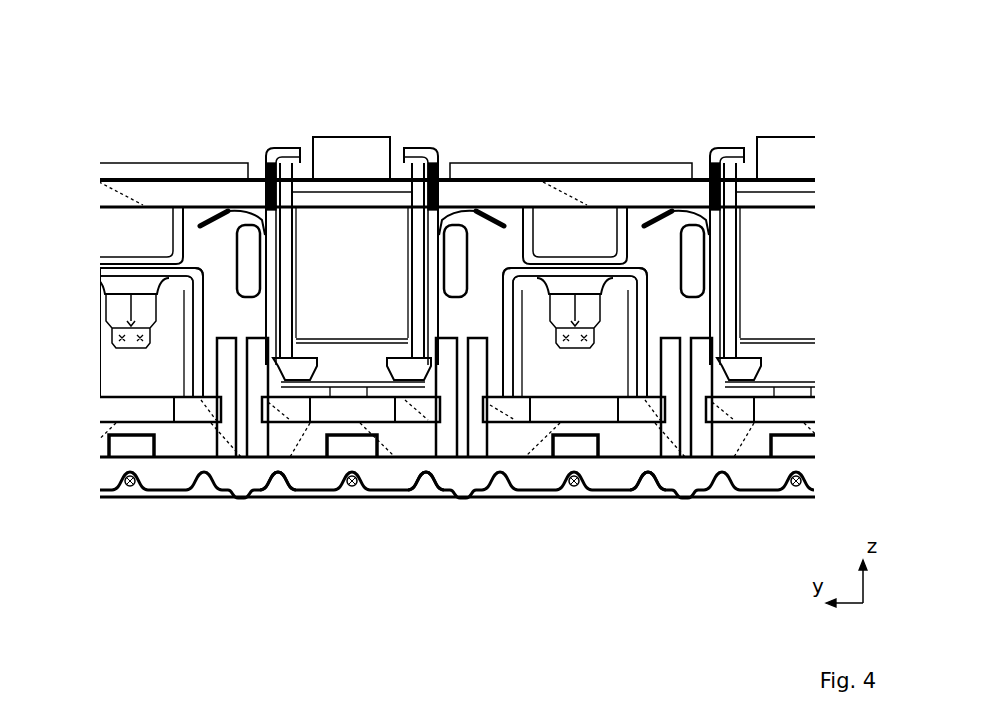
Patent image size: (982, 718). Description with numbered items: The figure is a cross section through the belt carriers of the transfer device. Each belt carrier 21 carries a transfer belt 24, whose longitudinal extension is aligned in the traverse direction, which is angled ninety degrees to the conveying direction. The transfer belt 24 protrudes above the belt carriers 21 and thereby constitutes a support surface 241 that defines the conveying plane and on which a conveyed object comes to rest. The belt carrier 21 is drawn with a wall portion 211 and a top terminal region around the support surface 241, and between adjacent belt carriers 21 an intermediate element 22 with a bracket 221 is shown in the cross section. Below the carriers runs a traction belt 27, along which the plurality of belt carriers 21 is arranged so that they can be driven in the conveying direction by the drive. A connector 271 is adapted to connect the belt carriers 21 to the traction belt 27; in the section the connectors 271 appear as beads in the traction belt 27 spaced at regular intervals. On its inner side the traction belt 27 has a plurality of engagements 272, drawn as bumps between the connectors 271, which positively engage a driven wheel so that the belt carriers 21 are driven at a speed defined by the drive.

The belt carrier 21 is at (353, 75).
The intermediate element 22 is at (565, 75).
The transfer belt 24 is at (334, 168).
The support surface 241 is at (363, 137).
The cell housing wall 211 is at (418, 320).
The bracket of intermediate element 221 is at (632, 379).
The traction belt 27 is at (110, 467).
The connector 271 is at (131, 488).
The engagement 272 is at (287, 484).